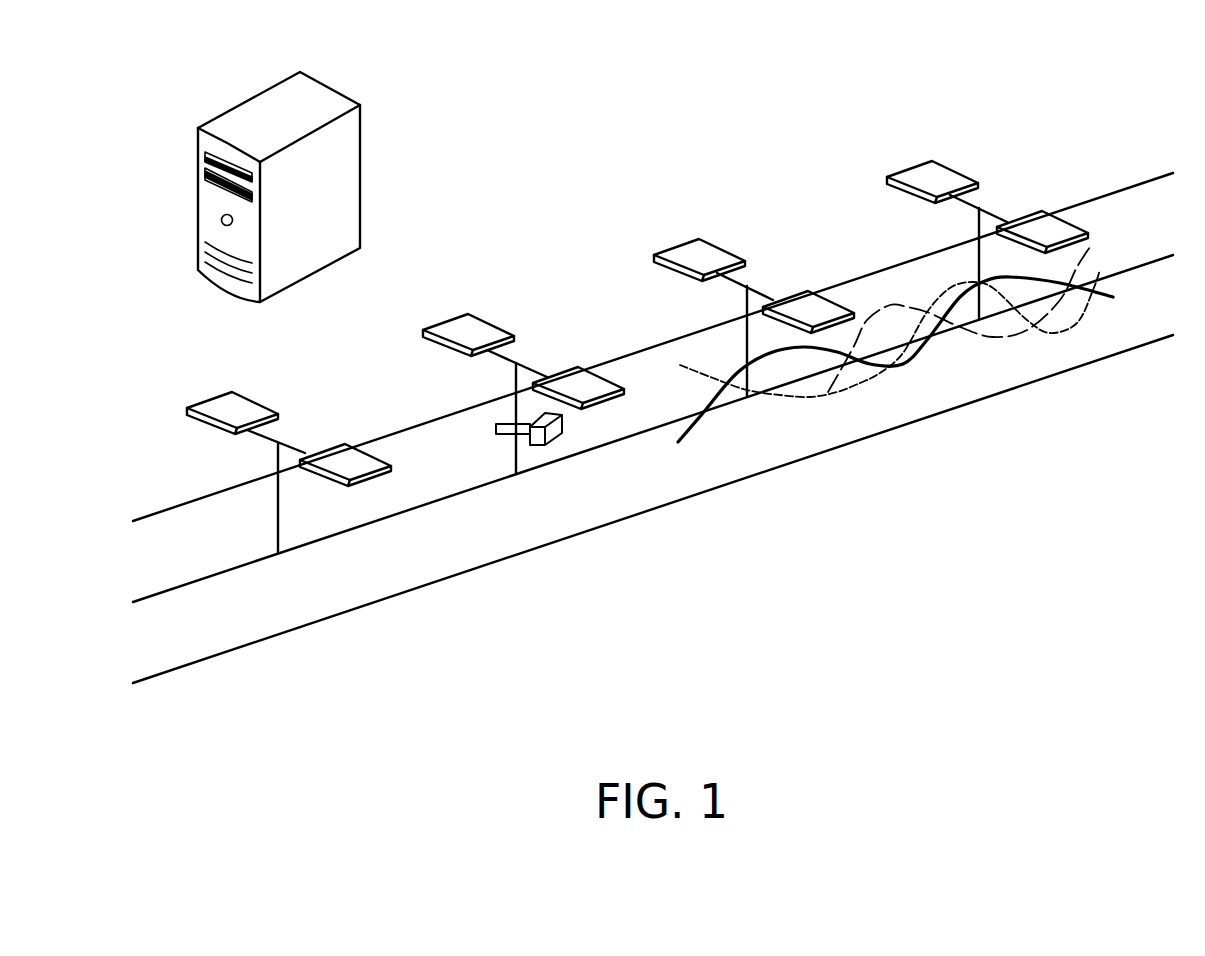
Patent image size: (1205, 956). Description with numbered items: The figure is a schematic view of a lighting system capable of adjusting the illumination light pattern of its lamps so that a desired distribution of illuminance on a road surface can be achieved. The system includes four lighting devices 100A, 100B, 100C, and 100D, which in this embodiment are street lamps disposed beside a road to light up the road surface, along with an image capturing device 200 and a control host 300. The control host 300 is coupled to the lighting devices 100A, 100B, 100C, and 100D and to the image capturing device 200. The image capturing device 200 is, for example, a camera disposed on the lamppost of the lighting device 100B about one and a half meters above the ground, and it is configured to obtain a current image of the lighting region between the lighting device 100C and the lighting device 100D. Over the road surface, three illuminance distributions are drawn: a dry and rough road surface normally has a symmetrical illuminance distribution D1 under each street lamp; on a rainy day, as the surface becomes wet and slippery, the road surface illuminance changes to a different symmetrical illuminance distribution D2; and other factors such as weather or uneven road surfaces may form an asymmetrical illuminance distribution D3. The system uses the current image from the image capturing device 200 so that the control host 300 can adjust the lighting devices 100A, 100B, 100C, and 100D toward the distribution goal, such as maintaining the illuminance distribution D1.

The control host 300 is at (331, 88).
The lighting device 100A is at (212, 397).
The lighting device 100B is at (448, 317).
The lighting device 100C is at (678, 240).
The lighting device 100D is at (913, 160).
The image capturing device 200 is at (535, 422).
The illuminance distribution D1 is at (520, 601).
The illuminance distribution D2 is at (520, 640).
The illuminance distribution D3 is at (520, 680).